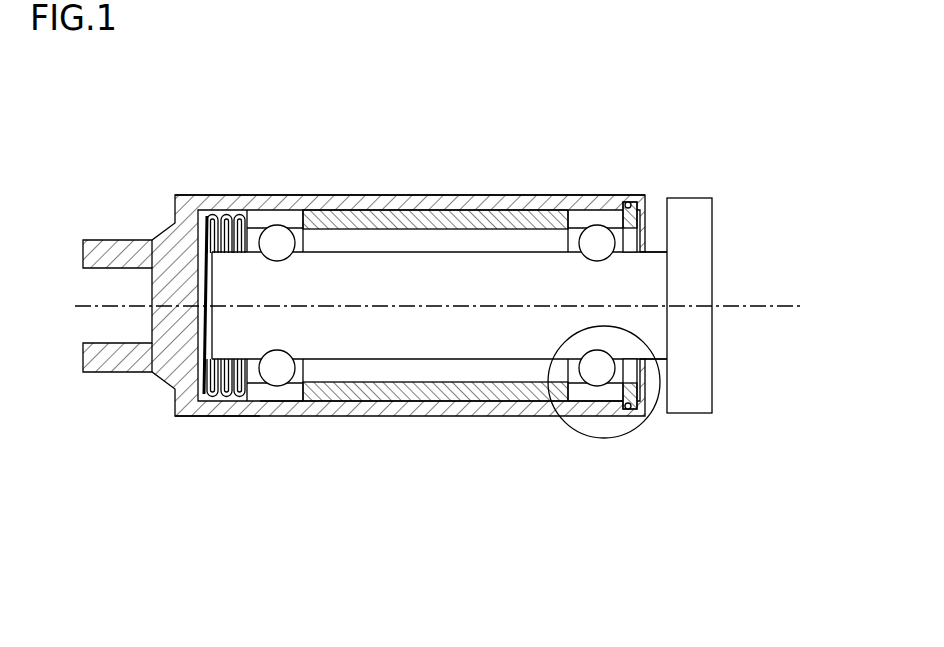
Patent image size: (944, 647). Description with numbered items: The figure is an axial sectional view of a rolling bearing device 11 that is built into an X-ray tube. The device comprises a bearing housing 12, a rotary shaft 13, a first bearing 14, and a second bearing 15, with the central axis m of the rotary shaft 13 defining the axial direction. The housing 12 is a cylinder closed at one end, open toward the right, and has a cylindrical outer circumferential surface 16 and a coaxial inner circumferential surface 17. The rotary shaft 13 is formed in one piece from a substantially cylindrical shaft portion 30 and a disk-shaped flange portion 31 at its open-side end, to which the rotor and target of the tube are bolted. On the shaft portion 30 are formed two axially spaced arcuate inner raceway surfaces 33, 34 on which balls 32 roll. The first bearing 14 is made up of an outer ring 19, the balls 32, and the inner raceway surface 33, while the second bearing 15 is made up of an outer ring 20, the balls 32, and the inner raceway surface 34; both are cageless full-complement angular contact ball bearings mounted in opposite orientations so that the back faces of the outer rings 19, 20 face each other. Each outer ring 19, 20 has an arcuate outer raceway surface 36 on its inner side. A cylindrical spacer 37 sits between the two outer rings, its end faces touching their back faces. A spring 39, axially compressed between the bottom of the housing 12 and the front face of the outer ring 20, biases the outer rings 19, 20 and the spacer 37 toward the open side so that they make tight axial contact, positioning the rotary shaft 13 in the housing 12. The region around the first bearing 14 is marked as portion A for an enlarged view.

The rolling bearing device 11 is at (643, 154).
The bearing housing 12 is at (450, 203).
The rotary shaft 13 is at (516, 291).
The first bearing 14 is at (624, 422).
The second bearing 15 is at (254, 420).
The outer circumferential surface 16 is at (413, 205).
The inner circumferential surface 17 is at (360, 220).
The outer ring 19 is at (577, 417).
The outer ring 20 is at (290, 395).
The shaft portion 30 is at (447, 340).
The flange portion 31 is at (695, 197).
The balls 32 is at (265, 385).
The inner raceway surface 33 is at (593, 250).
The inner raceway surface 34 is at (268, 245).
The outer raceway surface 36 is at (273, 380).
The spacer 37 is at (492, 218).
The spring 39 is at (217, 395).
The central axis m is at (747, 307).
The portion A is at (653, 419).